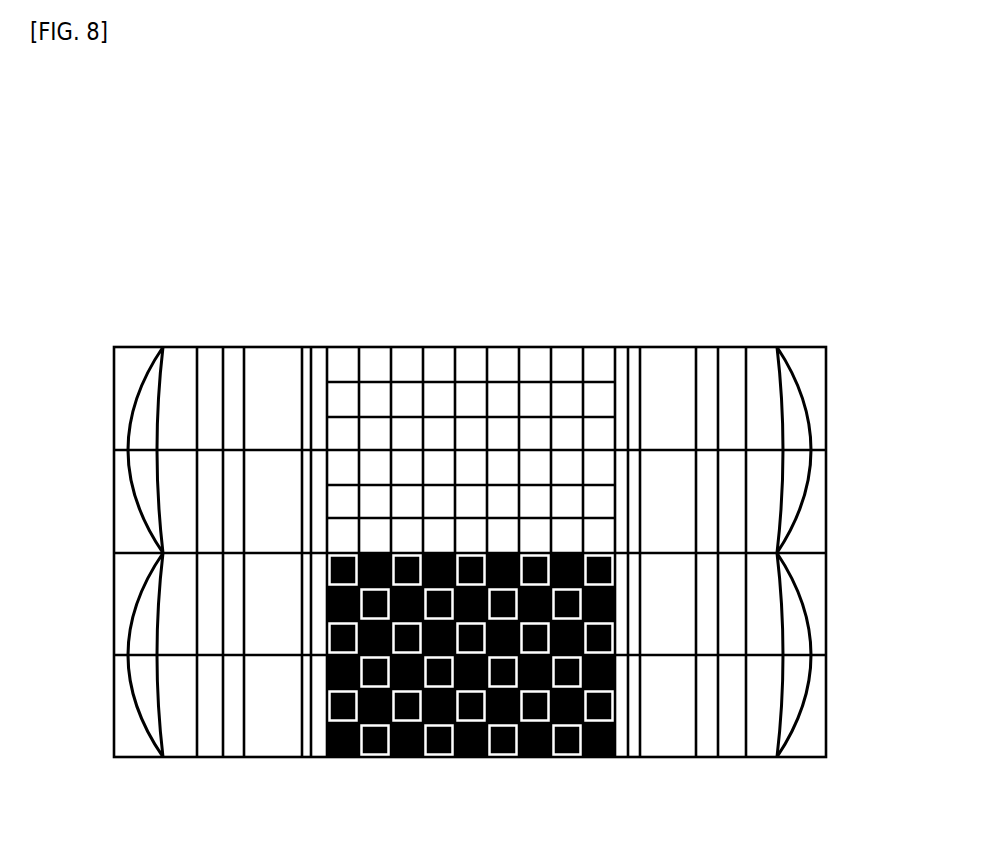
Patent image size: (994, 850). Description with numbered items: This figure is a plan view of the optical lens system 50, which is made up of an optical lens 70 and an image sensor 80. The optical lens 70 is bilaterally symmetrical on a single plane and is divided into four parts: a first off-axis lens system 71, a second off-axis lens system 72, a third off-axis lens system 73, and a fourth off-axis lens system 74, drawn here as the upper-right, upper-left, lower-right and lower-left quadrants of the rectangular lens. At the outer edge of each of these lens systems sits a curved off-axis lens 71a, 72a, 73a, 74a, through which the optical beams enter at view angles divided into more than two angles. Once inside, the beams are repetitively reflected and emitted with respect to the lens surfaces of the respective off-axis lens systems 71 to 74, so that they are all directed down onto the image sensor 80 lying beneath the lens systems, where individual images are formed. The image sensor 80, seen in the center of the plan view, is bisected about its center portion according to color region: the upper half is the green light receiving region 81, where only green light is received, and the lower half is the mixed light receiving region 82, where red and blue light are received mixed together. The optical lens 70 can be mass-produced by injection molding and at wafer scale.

The optical lens system 50 is at (762, 262).
The optical lens 70 is at (178, 325).
The first off-axis lens system 71 is at (668, 357).
The second off-axis lens system 72 is at (273, 355).
The third off-axis lens system 73 is at (668, 745).
The fourth off-axis lens system 74 is at (272, 745).
The off-axis lens 71a is at (797, 418).
The off-axis lens 72a is at (140, 418).
The off-axis lens 73a is at (797, 625).
The off-axis lens 74a is at (140, 622).
The image sensor 80 is at (409, 325).
The green light receiving region 81 is at (472, 358).
The mixed light receiving region 82 is at (468, 759).